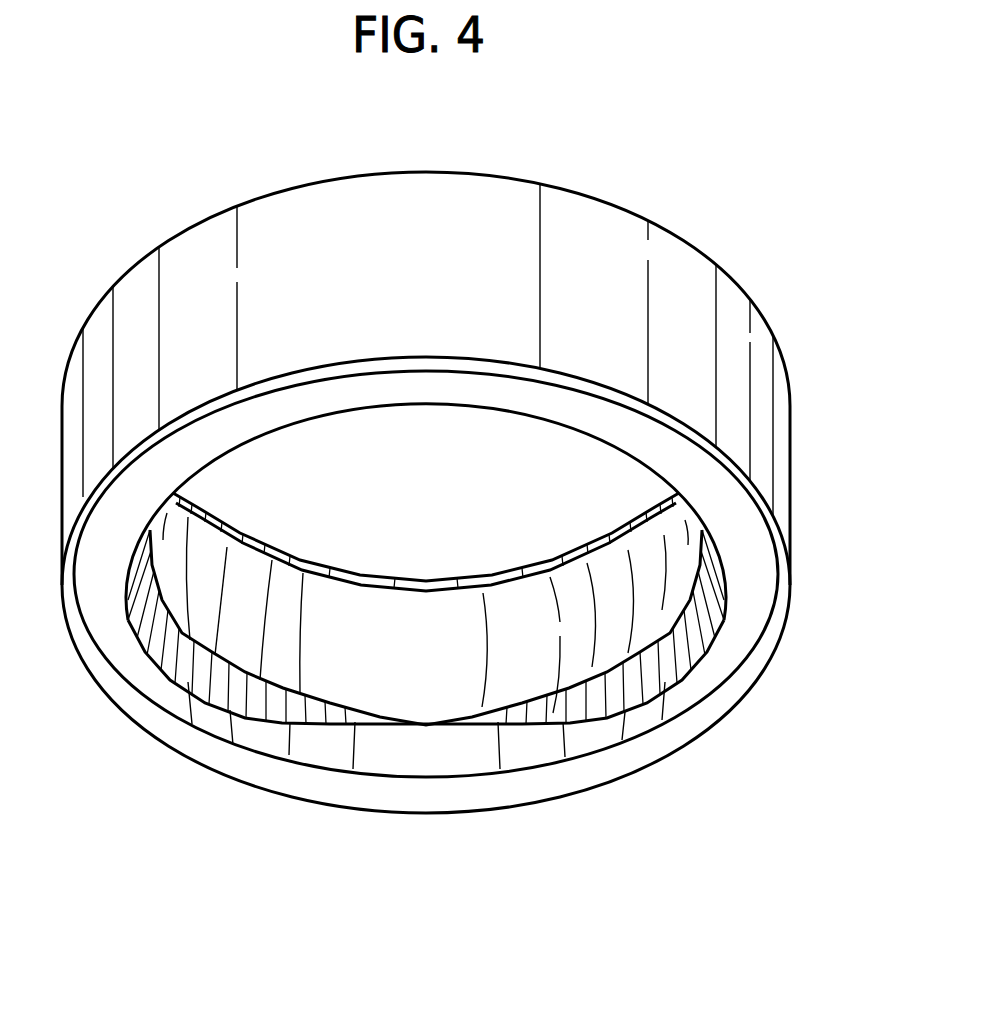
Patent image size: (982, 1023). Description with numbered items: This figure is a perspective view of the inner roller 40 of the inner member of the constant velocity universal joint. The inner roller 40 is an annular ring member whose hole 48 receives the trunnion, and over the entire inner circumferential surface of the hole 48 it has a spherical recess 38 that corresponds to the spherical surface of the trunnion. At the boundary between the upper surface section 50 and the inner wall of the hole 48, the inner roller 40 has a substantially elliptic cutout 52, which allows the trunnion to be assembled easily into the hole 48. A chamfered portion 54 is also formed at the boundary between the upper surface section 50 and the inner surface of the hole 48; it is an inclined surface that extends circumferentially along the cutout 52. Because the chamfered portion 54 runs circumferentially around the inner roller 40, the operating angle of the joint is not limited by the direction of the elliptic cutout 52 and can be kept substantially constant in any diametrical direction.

The inner roller 40 is at (620, 165).
The spherical recess 38 is at (660, 573).
The hole 48 is at (510, 455).
The upper surface section 50 is at (168, 717).
The elliptic cutout 52 is at (267, 703).
The chamfered portion 54 is at (437, 753).